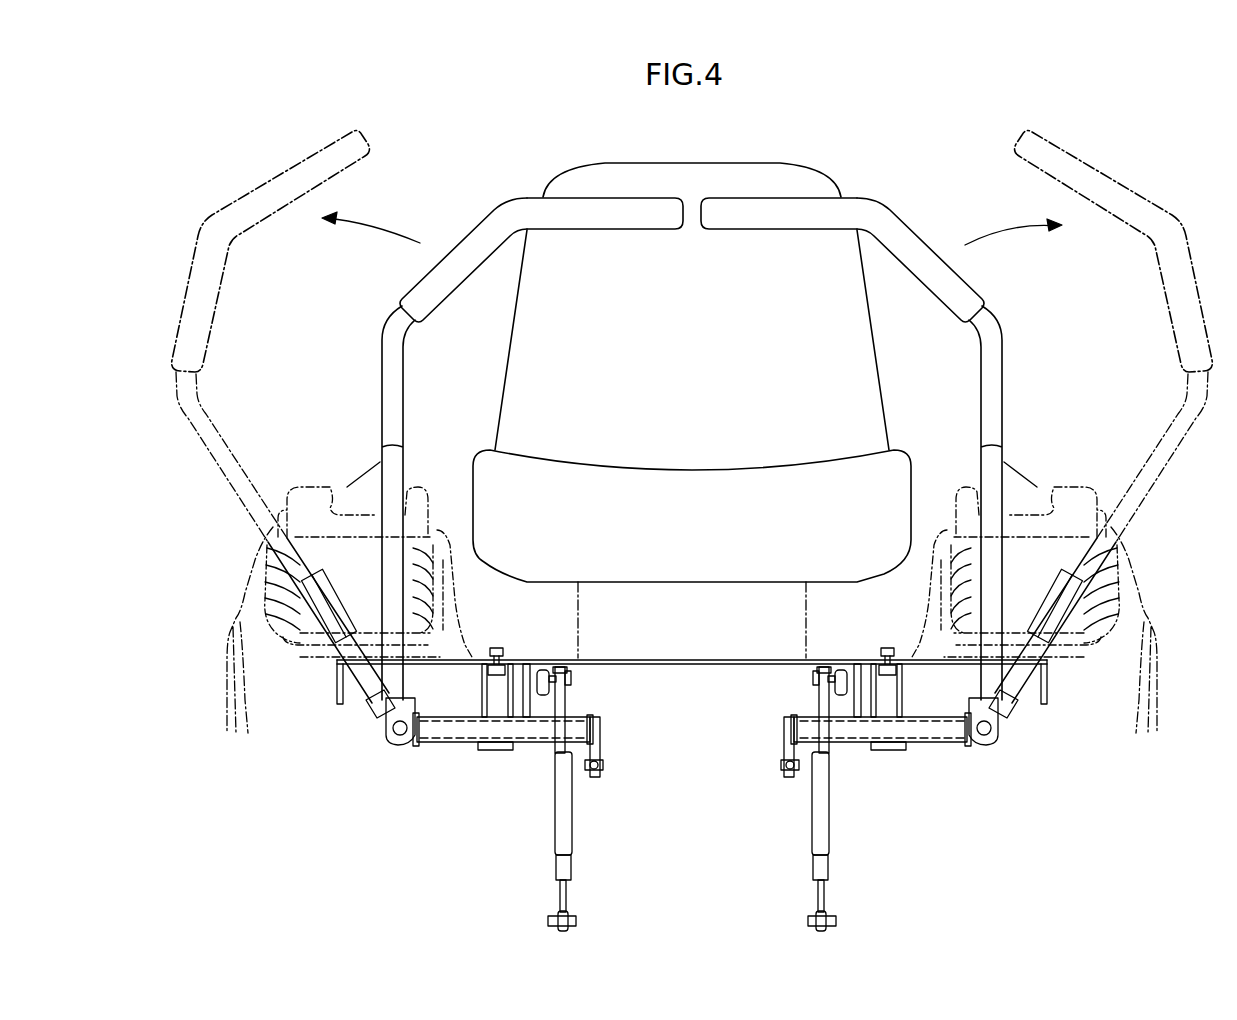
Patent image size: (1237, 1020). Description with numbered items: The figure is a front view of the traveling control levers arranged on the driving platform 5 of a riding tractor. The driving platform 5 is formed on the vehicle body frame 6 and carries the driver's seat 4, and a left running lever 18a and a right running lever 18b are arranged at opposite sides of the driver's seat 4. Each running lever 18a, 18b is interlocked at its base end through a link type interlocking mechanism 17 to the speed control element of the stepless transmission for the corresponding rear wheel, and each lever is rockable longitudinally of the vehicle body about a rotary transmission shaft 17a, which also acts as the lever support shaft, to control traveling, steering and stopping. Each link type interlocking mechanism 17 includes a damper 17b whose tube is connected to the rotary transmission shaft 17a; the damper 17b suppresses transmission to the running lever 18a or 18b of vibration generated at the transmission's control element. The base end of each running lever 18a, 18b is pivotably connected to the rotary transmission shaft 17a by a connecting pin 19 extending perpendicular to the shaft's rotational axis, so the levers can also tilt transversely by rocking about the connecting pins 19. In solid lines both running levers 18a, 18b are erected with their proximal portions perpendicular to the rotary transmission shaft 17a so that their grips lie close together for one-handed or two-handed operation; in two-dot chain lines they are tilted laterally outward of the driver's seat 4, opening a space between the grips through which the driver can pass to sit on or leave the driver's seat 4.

The driver's seat 4 is at (593, 182).
The driving platform 5 is at (927, 200).
The vehicle body frame 6 is at (500, 752).
The link type interlocking mechanism 17 is at (699, 799).
The rotary transmission shaft 17a is at (447, 747).
The damper 17b is at (558, 842).
The left running lever 18a is at (770, 218).
The right running lever 18b is at (603, 218).
The connecting pin 19 is at (397, 737).